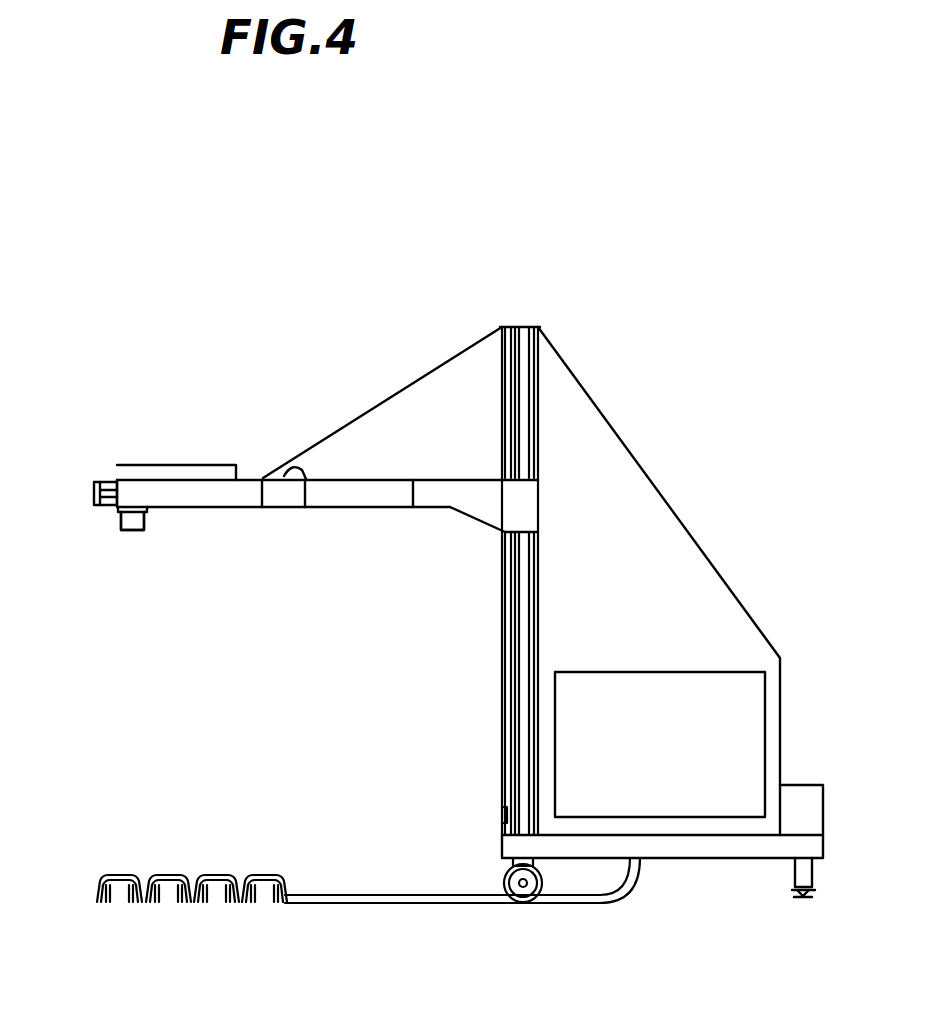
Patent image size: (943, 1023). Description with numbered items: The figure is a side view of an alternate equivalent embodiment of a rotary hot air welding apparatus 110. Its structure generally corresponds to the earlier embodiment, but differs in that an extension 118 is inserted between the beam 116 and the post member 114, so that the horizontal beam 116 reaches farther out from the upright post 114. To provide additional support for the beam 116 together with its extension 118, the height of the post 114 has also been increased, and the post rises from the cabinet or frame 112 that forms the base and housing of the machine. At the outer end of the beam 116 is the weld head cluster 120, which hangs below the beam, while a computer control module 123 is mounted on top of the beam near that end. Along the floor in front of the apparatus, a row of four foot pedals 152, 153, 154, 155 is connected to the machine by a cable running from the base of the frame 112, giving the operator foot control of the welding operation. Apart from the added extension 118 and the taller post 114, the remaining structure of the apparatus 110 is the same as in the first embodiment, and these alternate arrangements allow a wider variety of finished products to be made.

The rotary hot air welding apparatus 110 is at (686, 405).
The cabinet or frame 112 is at (693, 759).
The post member 114 is at (502, 756).
The beam 116 is at (196, 500).
The extension 118 is at (341, 500).
The weld head cluster 120 is at (132, 531).
The computer control module 123 is at (191, 464).
The foot pedal 152 is at (117, 873).
The foot pedal 153 is at (165, 873).
The foot pedal 154 is at (212, 873).
The foot pedal 155 is at (260, 873).